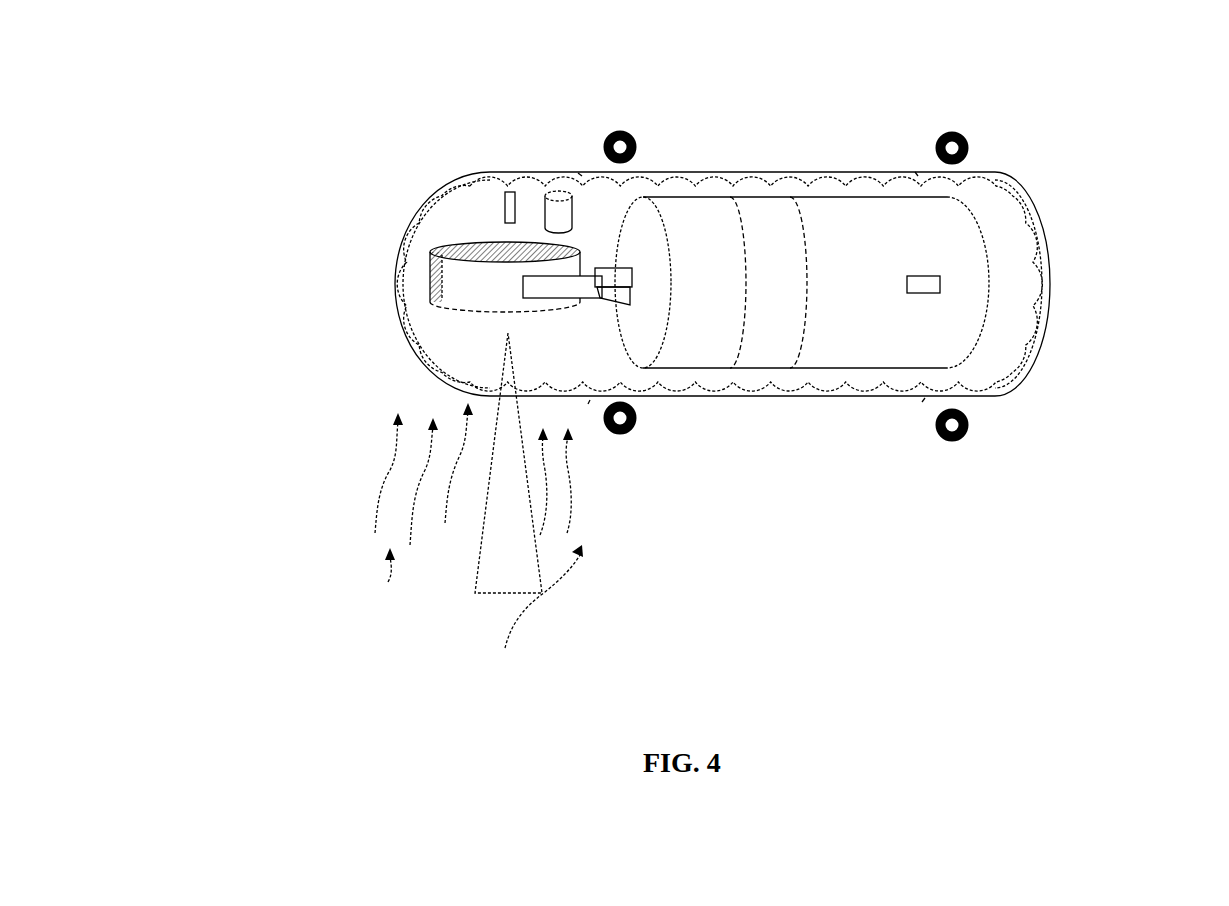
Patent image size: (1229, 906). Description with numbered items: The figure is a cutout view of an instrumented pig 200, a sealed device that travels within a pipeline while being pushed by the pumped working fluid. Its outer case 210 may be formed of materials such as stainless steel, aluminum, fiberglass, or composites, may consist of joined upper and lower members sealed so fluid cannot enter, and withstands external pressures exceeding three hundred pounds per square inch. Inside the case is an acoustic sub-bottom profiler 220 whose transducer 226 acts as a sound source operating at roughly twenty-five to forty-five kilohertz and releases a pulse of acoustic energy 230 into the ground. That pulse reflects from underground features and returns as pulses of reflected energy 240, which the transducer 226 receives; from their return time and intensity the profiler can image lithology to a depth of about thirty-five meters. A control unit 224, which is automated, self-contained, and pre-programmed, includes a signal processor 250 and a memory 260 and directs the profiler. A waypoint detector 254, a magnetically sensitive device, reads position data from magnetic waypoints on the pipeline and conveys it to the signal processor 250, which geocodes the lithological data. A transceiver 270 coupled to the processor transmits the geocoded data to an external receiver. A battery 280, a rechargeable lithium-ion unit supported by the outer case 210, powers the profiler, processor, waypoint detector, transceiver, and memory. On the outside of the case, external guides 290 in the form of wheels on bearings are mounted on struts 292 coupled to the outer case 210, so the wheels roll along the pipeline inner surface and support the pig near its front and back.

The instrumented pig 200 is at (305, 160).
The outer case 210 is at (1043, 222).
The acoustic sub-bottom profiler 220 is at (420, 258).
The control unit 224 is at (615, 318).
The transducer 226 is at (427, 280).
The pulse of acoustic energy 230 is at (475, 568).
The pulses of reflected energy 240 is at (400, 592).
The signal processor 250 is at (687, 370).
The waypoint detector 254 is at (505, 207).
The memory 260 is at (750, 370).
The transceiver 270 is at (553, 191).
The battery 280 is at (848, 370).
The external guide 290 is at (638, 142).
The strut 292 is at (578, 173).